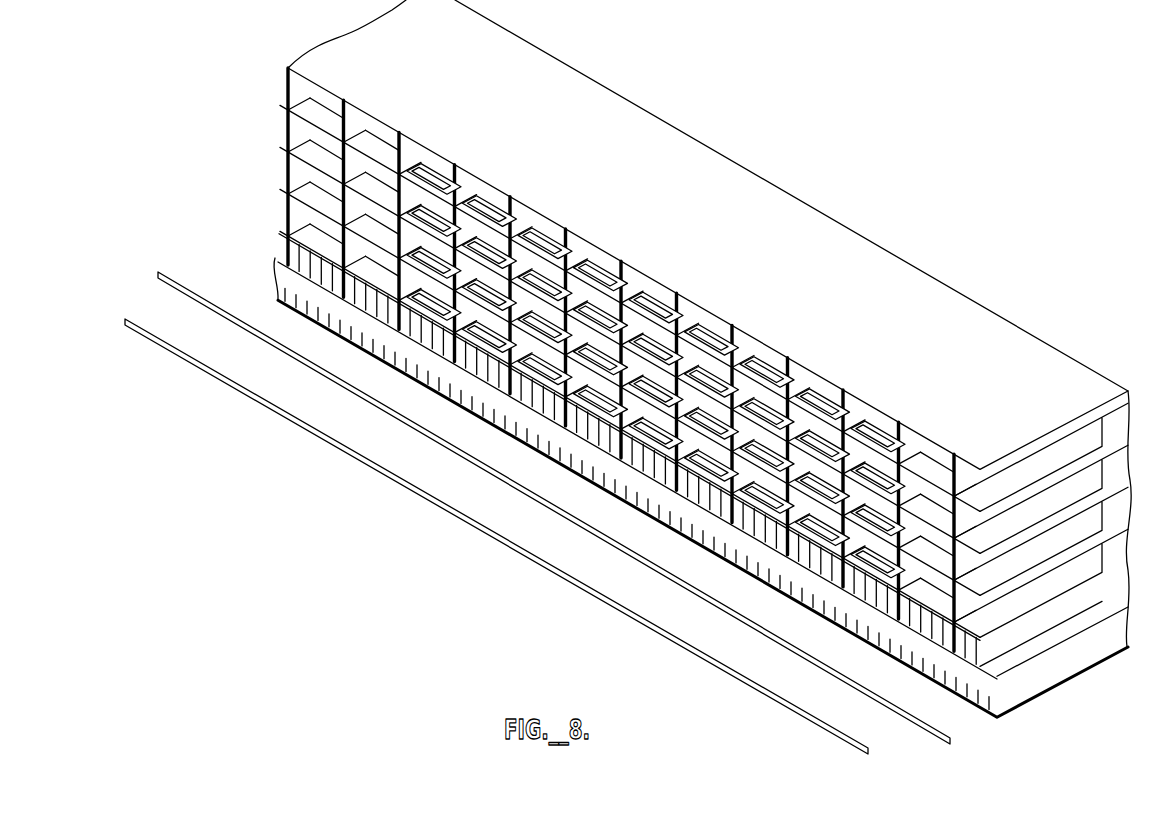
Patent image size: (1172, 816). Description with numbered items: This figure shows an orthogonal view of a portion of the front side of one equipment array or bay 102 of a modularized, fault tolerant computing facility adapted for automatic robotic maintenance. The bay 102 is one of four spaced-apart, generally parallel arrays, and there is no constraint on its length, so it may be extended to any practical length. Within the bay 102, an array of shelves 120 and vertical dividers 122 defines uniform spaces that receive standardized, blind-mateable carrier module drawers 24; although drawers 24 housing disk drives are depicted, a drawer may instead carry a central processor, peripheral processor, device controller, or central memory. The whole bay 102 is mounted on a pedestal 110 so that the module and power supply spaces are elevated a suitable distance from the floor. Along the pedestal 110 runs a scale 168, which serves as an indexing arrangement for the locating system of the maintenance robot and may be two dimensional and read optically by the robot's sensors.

The equipment array or bay 102 is at (723, 371).
The vertical dividers 122 is at (345, 123).
The shelves 120 is at (376, 146).
The carrier module drawer 24 is at (517, 200).
The pedestal 110 is at (1108, 604).
The scale 168 is at (965, 685).